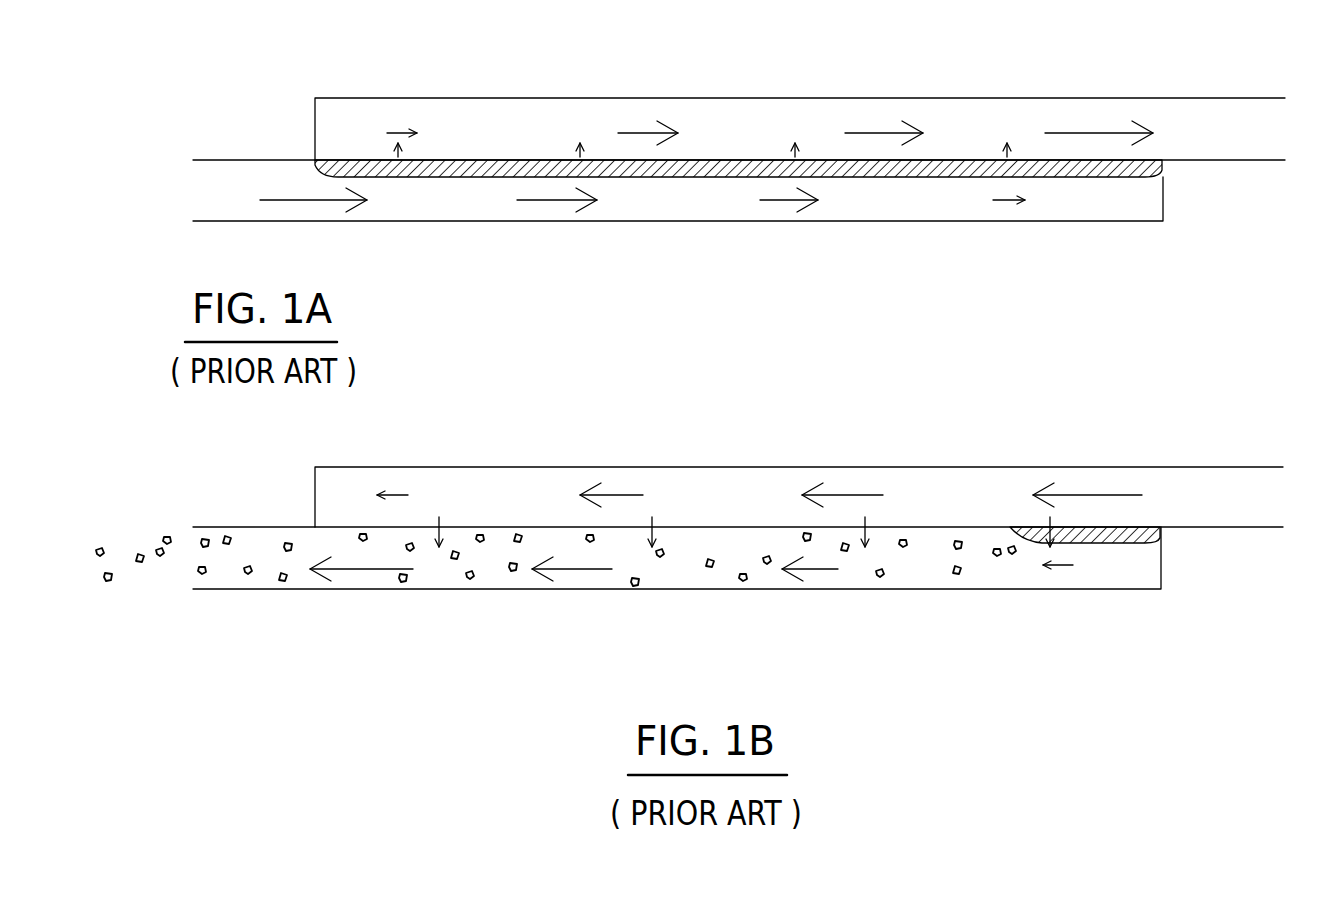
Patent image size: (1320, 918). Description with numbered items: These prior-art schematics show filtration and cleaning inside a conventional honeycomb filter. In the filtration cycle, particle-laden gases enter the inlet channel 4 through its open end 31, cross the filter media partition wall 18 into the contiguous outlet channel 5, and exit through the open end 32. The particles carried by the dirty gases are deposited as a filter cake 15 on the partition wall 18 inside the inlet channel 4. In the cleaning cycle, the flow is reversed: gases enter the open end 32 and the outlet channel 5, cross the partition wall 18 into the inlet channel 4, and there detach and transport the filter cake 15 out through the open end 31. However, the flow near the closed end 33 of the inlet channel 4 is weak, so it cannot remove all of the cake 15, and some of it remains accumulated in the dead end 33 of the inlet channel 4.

In FIG. 1A, the inlet channel 4 is at (693, 198).
In FIG. 1B, the inlet channel 4 is at (683, 567).
In FIG. 1A, the outlet channel 5 is at (593, 120).
In FIG. 1B, the outlet channel 5 is at (697, 498).
In FIG. 1A, the filter cake 15 is at (900, 177).
In FIG. 1B, the filter cake 15 is at (142, 567).
In FIG. 1A, the partition wall 18 is at (940, 158).
In FIG. 1B, the partition wall 18 is at (935, 527).
In FIG. 1A, the open end of inlet channel 31 is at (187, 193).
In FIG. 1B, the open end of inlet channel 31 is at (188, 537).
In FIG. 1A, the open end of outlet channel 32 is at (1267, 133).
In FIG. 1B, the open end of outlet channel 32 is at (1258, 490).
In FIG. 1B, the closed end of inlet channel 33 is at (1175, 553).